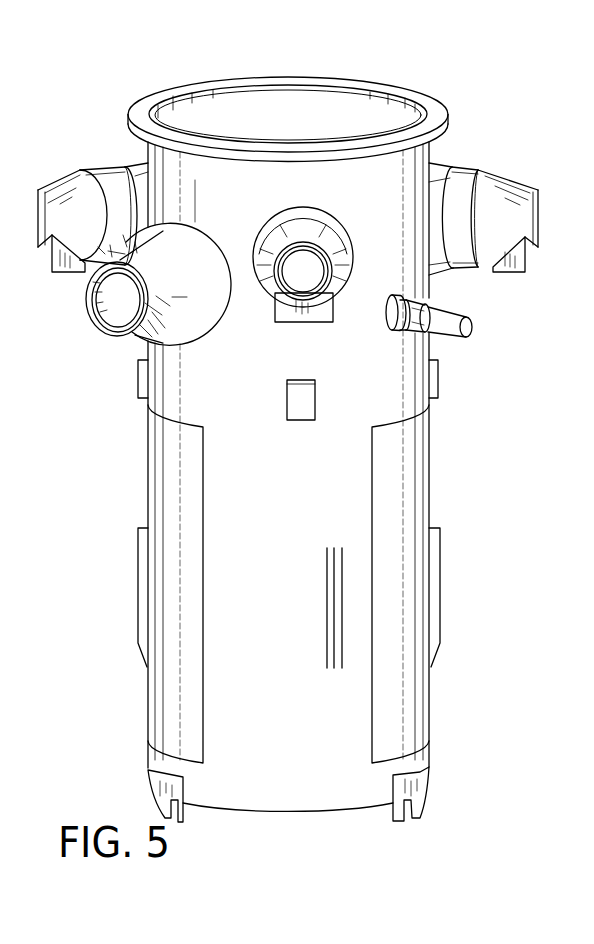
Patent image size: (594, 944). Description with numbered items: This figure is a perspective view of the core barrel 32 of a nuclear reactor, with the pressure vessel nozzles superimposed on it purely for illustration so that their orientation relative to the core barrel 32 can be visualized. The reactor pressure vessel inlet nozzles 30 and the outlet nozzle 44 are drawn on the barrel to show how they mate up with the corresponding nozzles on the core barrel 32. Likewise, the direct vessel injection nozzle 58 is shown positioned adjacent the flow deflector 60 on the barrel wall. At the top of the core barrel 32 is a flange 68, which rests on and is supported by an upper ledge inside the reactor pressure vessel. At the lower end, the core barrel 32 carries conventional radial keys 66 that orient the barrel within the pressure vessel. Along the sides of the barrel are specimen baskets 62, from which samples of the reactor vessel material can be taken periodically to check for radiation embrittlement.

The reactor pressure vessel inlet nozzle 30 is at (108, 166).
The core barrel 32 is at (310, 507).
The outlet nozzle 44 is at (190, 308).
The direct vessel injection nozzle 58 is at (452, 312).
The flow deflector 60 is at (383, 326).
The specimen basket 62 is at (137, 628).
The radial key 66 is at (150, 792).
The flange 68 is at (437, 108).